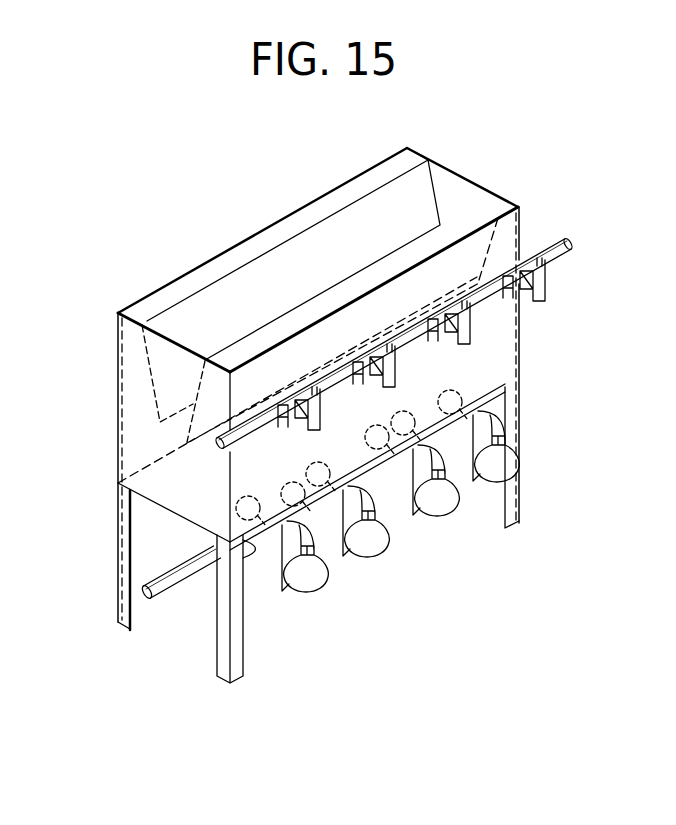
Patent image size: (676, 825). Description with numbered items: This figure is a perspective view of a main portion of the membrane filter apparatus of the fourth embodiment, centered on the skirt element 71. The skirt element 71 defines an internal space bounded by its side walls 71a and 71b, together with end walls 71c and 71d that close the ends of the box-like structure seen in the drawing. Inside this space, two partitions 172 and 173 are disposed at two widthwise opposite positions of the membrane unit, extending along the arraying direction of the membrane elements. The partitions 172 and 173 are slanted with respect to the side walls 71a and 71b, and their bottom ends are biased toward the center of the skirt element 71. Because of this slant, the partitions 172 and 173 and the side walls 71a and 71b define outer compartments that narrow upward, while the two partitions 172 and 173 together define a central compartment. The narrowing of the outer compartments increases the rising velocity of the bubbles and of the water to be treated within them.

The skirt element 71 is at (330, 415).
The side wall 71a is at (213, 267).
The side wall 71b is at (507, 362).
The left end plate 71c is at (118, 433).
The right end plate 71d is at (505, 200).
The partition 172 is at (148, 365).
The partition 173 is at (190, 425).